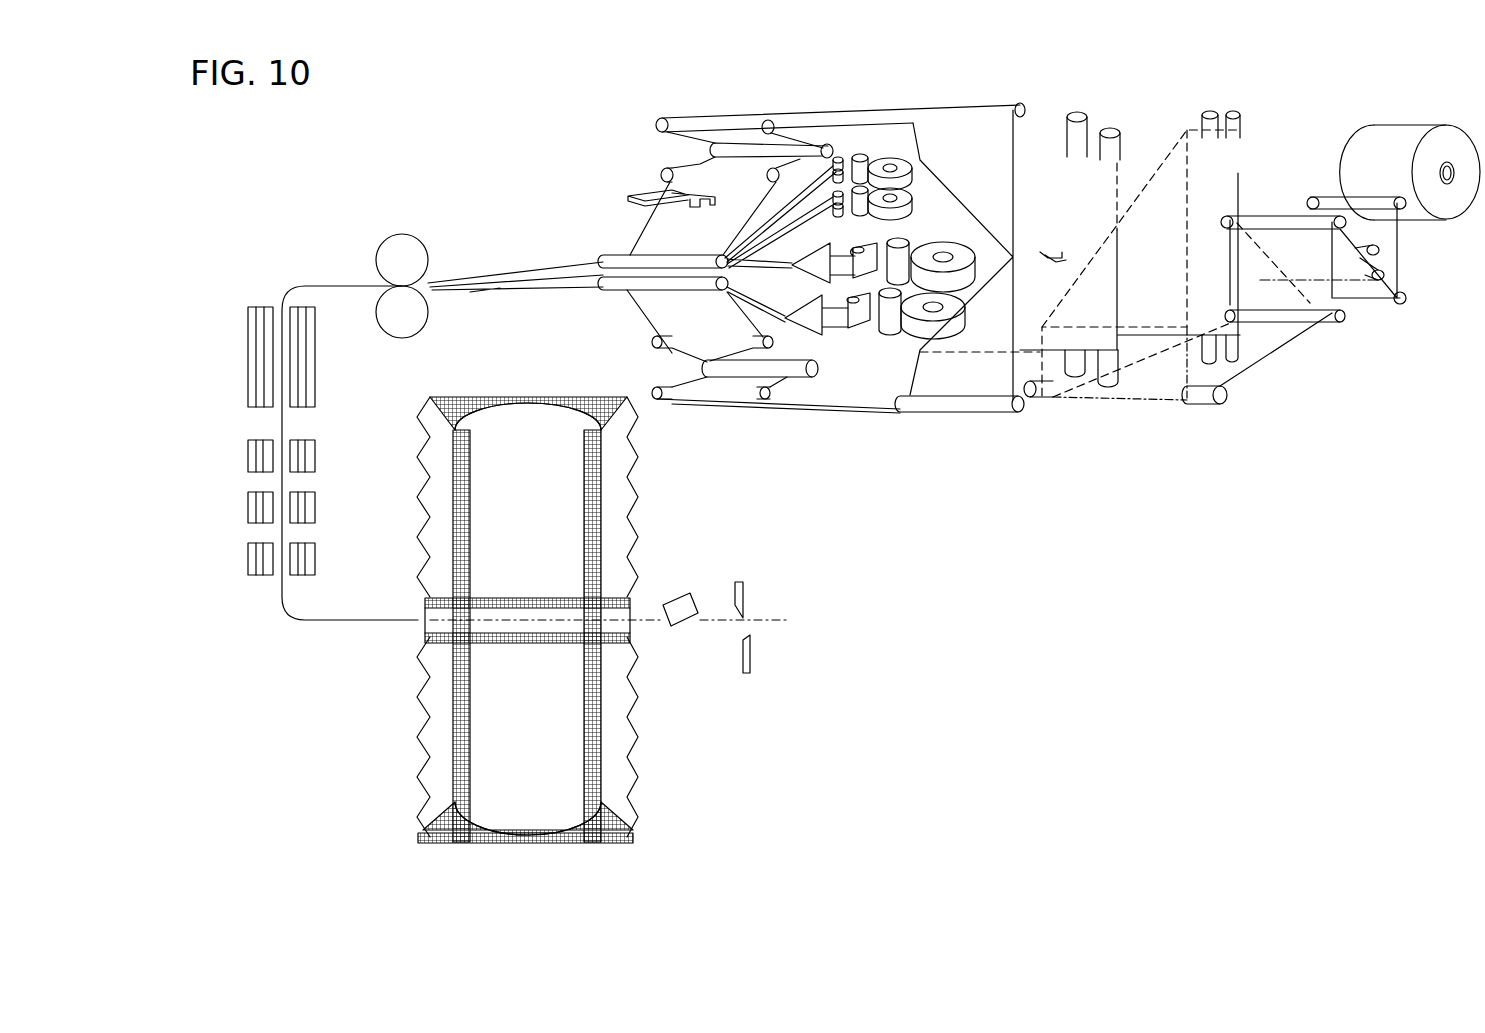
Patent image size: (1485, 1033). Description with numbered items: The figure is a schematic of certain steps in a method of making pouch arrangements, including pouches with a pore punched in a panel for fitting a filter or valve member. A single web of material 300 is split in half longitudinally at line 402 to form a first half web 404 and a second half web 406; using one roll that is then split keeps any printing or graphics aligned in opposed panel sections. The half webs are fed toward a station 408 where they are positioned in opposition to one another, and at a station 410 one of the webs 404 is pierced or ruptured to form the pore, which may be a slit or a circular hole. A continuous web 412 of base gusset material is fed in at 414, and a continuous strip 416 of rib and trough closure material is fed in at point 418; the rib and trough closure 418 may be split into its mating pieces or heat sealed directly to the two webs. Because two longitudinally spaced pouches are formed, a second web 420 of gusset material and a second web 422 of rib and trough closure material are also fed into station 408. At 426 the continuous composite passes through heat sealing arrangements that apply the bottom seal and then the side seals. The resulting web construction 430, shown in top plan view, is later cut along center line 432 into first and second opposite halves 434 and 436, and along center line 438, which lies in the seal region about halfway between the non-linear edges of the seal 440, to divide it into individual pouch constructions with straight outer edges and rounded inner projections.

The single web of material 300 is at (1398, 133).
The line 402 is at (1023, 255).
The first half web 404 is at (855, 110).
The second half web 406 is at (846, 410).
The station 408 is at (614, 146).
The station 410 is at (632, 193).
The continuous web of base gusset material 412 is at (915, 333).
The feed point 414 is at (732, 288).
The continuous strip of rib and trough closure material 416 is at (880, 162).
The rib and trough closure 418 is at (730, 253).
The second web of gusset material 420 is at (964, 250).
The second web of rib and trough closure material 422 is at (898, 214).
The heat sealing location 426 is at (235, 380).
The web construction 430 is at (531, 656).
The center line 432 is at (614, 622).
The first half 434 is at (662, 491).
The second half 436 is at (652, 766).
The center line 438 is at (600, 847).
The seal 440 is at (472, 502).